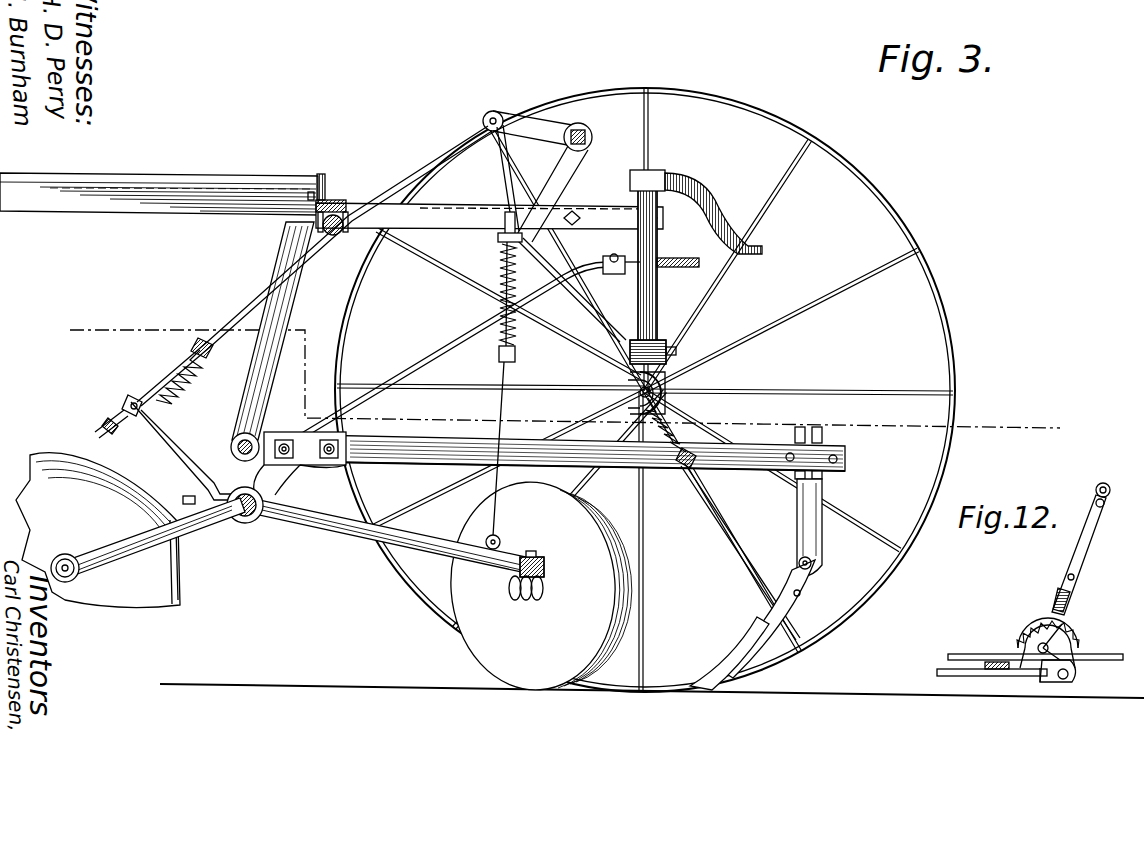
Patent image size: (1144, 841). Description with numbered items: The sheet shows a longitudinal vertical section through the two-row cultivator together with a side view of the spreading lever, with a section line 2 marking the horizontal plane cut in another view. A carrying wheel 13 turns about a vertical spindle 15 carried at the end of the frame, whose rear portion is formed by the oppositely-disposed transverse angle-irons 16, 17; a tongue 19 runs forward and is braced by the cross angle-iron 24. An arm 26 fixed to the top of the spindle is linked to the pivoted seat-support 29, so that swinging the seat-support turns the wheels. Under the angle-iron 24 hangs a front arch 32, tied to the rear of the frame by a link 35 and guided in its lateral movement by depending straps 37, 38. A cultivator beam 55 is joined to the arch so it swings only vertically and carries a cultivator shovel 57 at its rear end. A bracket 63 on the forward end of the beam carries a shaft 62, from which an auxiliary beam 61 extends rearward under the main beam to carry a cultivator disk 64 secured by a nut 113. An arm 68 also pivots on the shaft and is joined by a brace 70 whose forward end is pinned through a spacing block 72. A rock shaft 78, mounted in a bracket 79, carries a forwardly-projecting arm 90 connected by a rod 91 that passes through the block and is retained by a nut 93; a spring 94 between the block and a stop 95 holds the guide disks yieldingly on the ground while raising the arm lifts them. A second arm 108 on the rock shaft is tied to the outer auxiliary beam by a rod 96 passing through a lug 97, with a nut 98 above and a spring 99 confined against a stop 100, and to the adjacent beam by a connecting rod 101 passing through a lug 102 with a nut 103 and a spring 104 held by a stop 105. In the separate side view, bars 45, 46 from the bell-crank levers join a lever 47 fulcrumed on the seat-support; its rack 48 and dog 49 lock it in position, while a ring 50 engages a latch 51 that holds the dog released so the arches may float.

In FIG. 3, the section line 2- 2 is at (68, 322).
In FIG. 3, the carrying wheel 13 is at (870, 177).
In FIG. 3, the spindle 15 is at (55, 527).
In FIG. 3, the angle-iron 16 is at (682, 262).
In FIG. 3, the angle-iron 17 is at (610, 260).
In FIG. 3, the tongue 19 is at (237, 183).
In FIG. 3, the angle-iron 24 is at (330, 199).
In FIG. 3, the arm 26 is at (698, 188).
In FIG. 12, the seat-support 29 is at (1100, 657).
In FIG. 3, the arch 32 is at (310, 288).
In FIG. 3, the link 35 is at (430, 360).
In FIG. 3, the depending strap 37 is at (348, 217).
In FIG. 3, the depending strap 38 is at (312, 227).
In FIG. 12, the bar 45 is at (1012, 670).
In FIG. 12, the bar 46 is at (968, 670).
In FIG. 12, the lever 47 is at (1072, 548).
In FIG. 12, the rack 48 is at (1042, 626).
In FIG. 12, the dog 49 is at (1075, 634).
In FIG. 12, the ring 50 is at (1106, 486).
In FIG. 12, the latch 51 is at (1104, 504).
In FIG. 3, the cultivator beam 55 is at (415, 452).
In FIG. 3, the cultivator shovel 57 is at (748, 643).
In FIG. 3, the auxiliary beam 61 is at (380, 537).
In FIG. 3, the shaft 62 is at (252, 521).
In FIG. 3, the bracket 63 is at (288, 465).
In FIG. 3, the cultivator disk 64 is at (502, 638).
In FIG. 3, the arm 68 is at (137, 538).
In FIG. 3, the brace 70 is at (175, 448).
In FIG. 3, the spacing block 72 is at (126, 404).
In FIG. 3, the rock shaft 78 is at (593, 132).
In FIG. 3, the bracket 79 is at (580, 188).
In FIG. 3, the forwardly-projecting arm 90 is at (528, 130).
In FIG. 3, the rod 91 is at (246, 318).
In FIG. 3, the nut 93 is at (128, 430).
In FIG. 3, the spring 94 is at (183, 361).
In FIG. 3, the stop 95 is at (203, 343).
In FIG. 3, the rod 96 is at (502, 390).
In FIG. 3, the lug 97 is at (503, 236).
In FIG. 3, the nut 98 is at (508, 223).
In FIG. 3, the spring 99 is at (509, 337).
In FIG. 3, the stop 100 is at (513, 362).
In FIG. 3, the connecting rod 101 is at (573, 300).
In FIG. 3, the lug 102 is at (712, 500).
In FIG. 3, the nut 103 is at (713, 473).
In FIG. 3, the spring 104 is at (663, 407).
In FIG. 3, the stop 105 is at (627, 400).
In FIG. 3, the arm 108 is at (541, 180).
In FIG. 3, the nut 113 is at (540, 541).